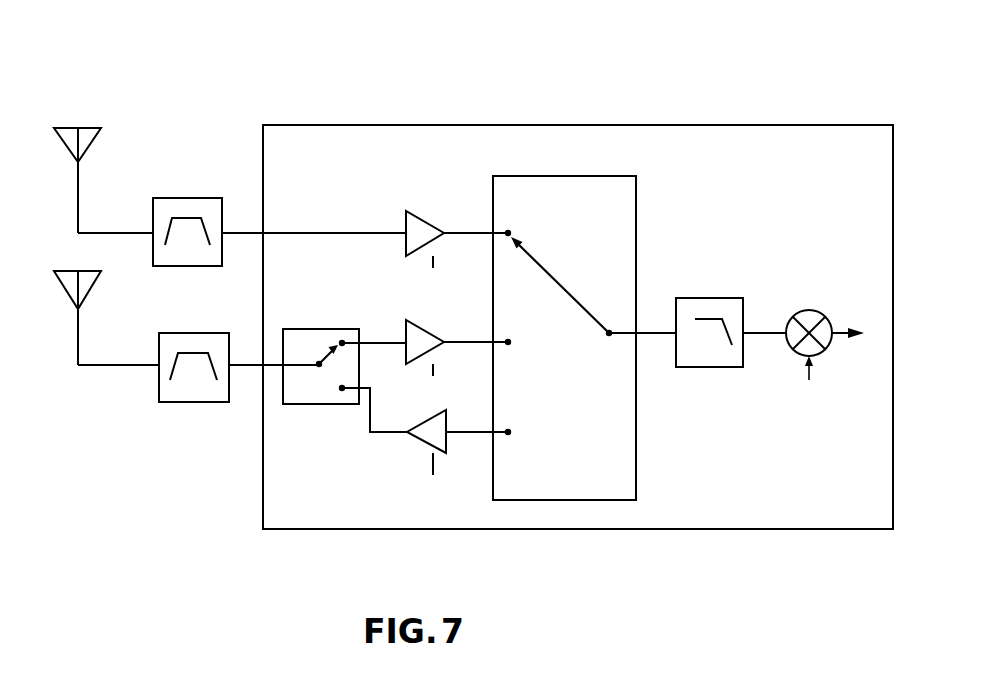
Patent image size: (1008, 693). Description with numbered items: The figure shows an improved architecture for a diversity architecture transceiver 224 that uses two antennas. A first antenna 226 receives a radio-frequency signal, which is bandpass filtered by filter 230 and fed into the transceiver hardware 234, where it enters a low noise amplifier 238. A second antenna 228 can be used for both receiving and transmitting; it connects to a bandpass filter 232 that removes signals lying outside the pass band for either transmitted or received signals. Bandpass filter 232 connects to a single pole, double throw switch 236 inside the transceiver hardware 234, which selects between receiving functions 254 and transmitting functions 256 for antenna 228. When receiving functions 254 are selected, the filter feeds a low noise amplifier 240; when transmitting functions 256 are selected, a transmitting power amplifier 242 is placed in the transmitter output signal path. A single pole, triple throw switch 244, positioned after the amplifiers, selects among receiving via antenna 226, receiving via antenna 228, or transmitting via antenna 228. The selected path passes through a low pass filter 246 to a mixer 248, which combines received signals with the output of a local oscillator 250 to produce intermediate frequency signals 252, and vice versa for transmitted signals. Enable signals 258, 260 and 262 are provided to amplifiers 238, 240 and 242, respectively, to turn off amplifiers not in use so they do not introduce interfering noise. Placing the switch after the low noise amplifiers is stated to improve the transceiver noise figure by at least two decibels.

The diversity architecture transceiver 224 is at (436, 108).
The first antenna 226 is at (85, 128).
The second antenna 228 is at (58, 271).
The bandpass filter 230 is at (190, 198).
The bandpass filter 232 is at (190, 333).
The transceiver hardware 234 is at (648, 124).
The single pole, double throw switch 236 is at (318, 329).
The low noise amplifier 238 is at (438, 222).
The low noise amplifier 240 is at (393, 297).
The transmitting power amplifier 242 is at (420, 424).
The single pole, triple throw switch 244 is at (562, 176).
The low pass filter 246 is at (735, 298).
The mixer 248 is at (790, 316).
The local oscillator 250 is at (795, 397).
The intermediate frequency signals 252 is at (868, 293).
The receiving functions 254 is at (475, 339).
The transmitting functions 256 is at (475, 434).
The enable signal 258 is at (470, 265).
The enable signal 260 is at (468, 372).
The enable signal 262 is at (426, 489).